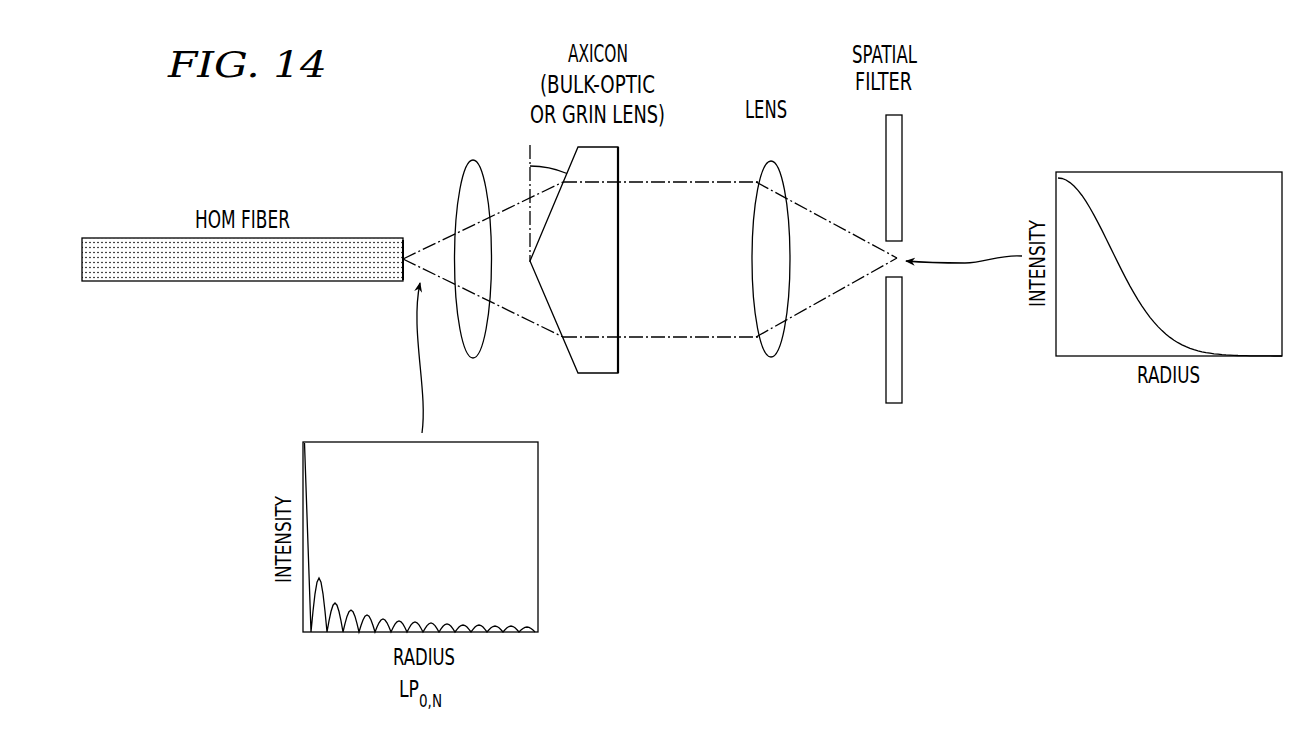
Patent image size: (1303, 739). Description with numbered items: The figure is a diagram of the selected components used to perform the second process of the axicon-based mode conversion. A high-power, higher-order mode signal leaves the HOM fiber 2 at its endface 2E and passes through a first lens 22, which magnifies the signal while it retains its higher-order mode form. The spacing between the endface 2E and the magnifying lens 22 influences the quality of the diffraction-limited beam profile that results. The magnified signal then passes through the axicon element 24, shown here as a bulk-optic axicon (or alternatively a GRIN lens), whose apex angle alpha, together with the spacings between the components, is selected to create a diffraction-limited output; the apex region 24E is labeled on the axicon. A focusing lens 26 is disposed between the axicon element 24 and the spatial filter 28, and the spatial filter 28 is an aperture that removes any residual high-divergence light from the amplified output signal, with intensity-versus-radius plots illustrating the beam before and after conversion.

The HOM fiber 2 is at (82, 258).
The endface of HOM fiber 2E is at (411, 243).
The first lens 22 is at (477, 159).
The axicon element 24 is at (598, 374).
The apex of axicon conical surface 24E is at (530, 263).
The focusing lens 26 is at (770, 358).
The spatial filter 28 is at (893, 404).